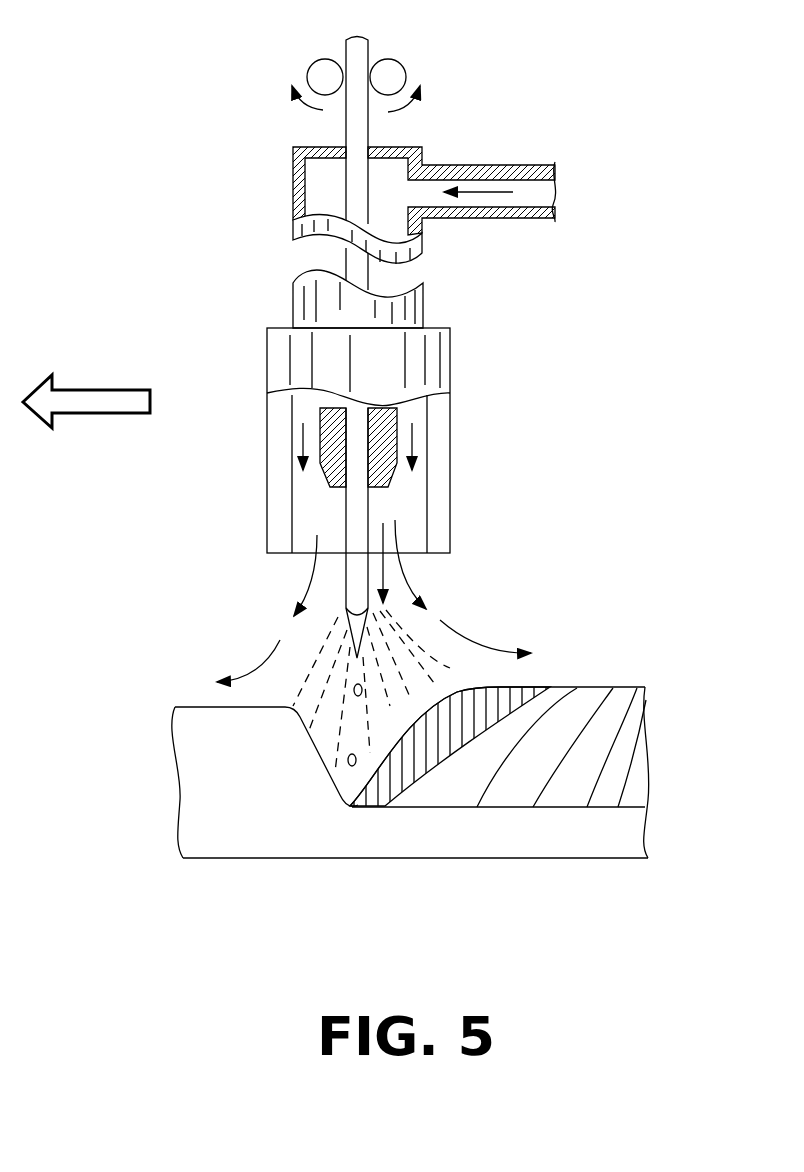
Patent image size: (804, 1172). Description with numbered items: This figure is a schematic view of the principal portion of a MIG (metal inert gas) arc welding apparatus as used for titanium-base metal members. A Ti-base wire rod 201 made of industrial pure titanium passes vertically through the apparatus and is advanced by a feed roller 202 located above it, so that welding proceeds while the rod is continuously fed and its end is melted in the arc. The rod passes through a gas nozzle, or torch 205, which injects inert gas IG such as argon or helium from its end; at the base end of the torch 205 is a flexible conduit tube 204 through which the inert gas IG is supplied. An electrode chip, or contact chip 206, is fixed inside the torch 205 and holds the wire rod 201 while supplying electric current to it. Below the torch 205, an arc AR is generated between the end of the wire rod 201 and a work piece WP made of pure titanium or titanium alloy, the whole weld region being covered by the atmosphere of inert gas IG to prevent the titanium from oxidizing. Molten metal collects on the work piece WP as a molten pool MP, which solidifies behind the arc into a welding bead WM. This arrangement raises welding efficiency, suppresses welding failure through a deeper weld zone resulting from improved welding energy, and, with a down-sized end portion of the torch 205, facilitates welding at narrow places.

The Ti-base wire rod 201 is at (358, 127).
The feed roller 202 is at (390, 73).
The flexible conduit tube 204 is at (420, 300).
The gas nozzle (torch) 205 is at (432, 380).
The electrode chip (contact chip) 206 is at (387, 423).
The inert gas IG is at (480, 193).
The arc AR is at (330, 680).
The molten pool MP is at (517, 717).
The welding bead WM is at (610, 757).
The work piece WP is at (200, 787).